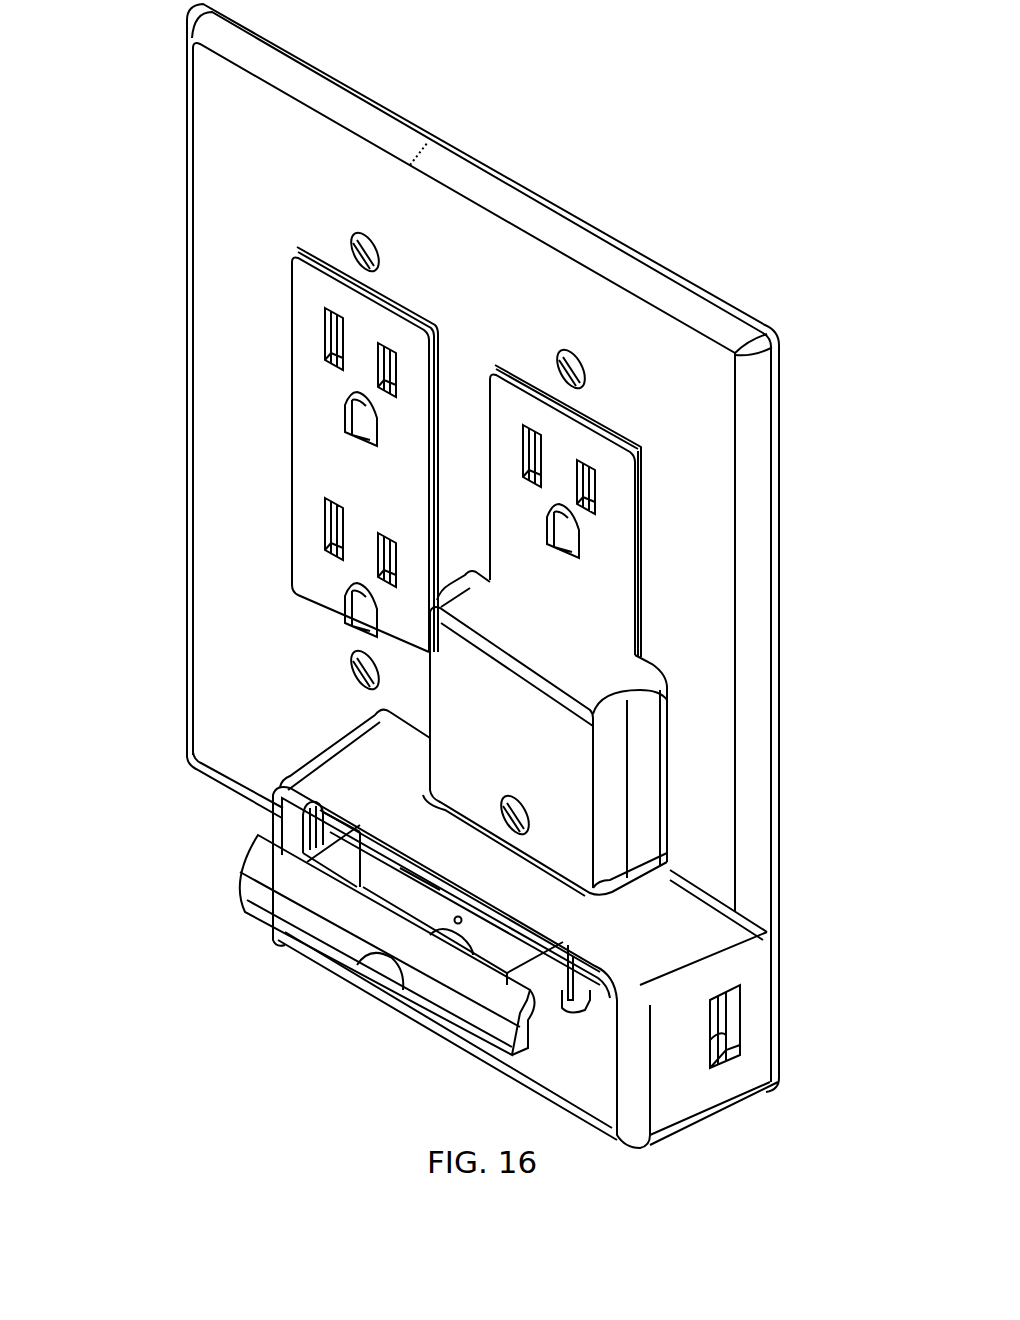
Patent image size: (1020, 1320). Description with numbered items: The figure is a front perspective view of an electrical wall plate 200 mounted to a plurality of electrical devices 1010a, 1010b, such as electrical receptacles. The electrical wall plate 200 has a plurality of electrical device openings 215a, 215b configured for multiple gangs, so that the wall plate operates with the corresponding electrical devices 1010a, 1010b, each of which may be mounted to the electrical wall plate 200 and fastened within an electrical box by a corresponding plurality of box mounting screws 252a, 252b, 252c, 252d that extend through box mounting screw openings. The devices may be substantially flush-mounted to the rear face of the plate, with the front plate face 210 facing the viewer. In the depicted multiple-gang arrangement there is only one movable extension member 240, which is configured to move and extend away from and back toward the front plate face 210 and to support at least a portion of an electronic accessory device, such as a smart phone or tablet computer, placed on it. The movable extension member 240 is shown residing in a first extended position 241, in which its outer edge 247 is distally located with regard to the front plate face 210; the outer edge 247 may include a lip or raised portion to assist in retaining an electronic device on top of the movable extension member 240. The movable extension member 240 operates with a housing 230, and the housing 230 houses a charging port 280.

The electrical wall plate 200 is at (490, 95).
The front plate face 210 is at (220, 105).
The electrical device opening 215a is at (645, 487).
The electrical device opening 215b is at (288, 302).
The electrical device 1010a is at (612, 578).
The electrical device 1010b is at (312, 392).
The box mounting screw 252a is at (578, 363).
The box mounting screw 252b is at (525, 817).
The box mounting screw 252c is at (354, 237).
The box mounting screw 252d is at (354, 656).
The housing 230 is at (688, 930).
The movable extension member 240 is at (232, 826).
The first extended position 241 is at (228, 865).
The outer edge 247 is at (262, 892).
The charging port 280 is at (730, 1017).